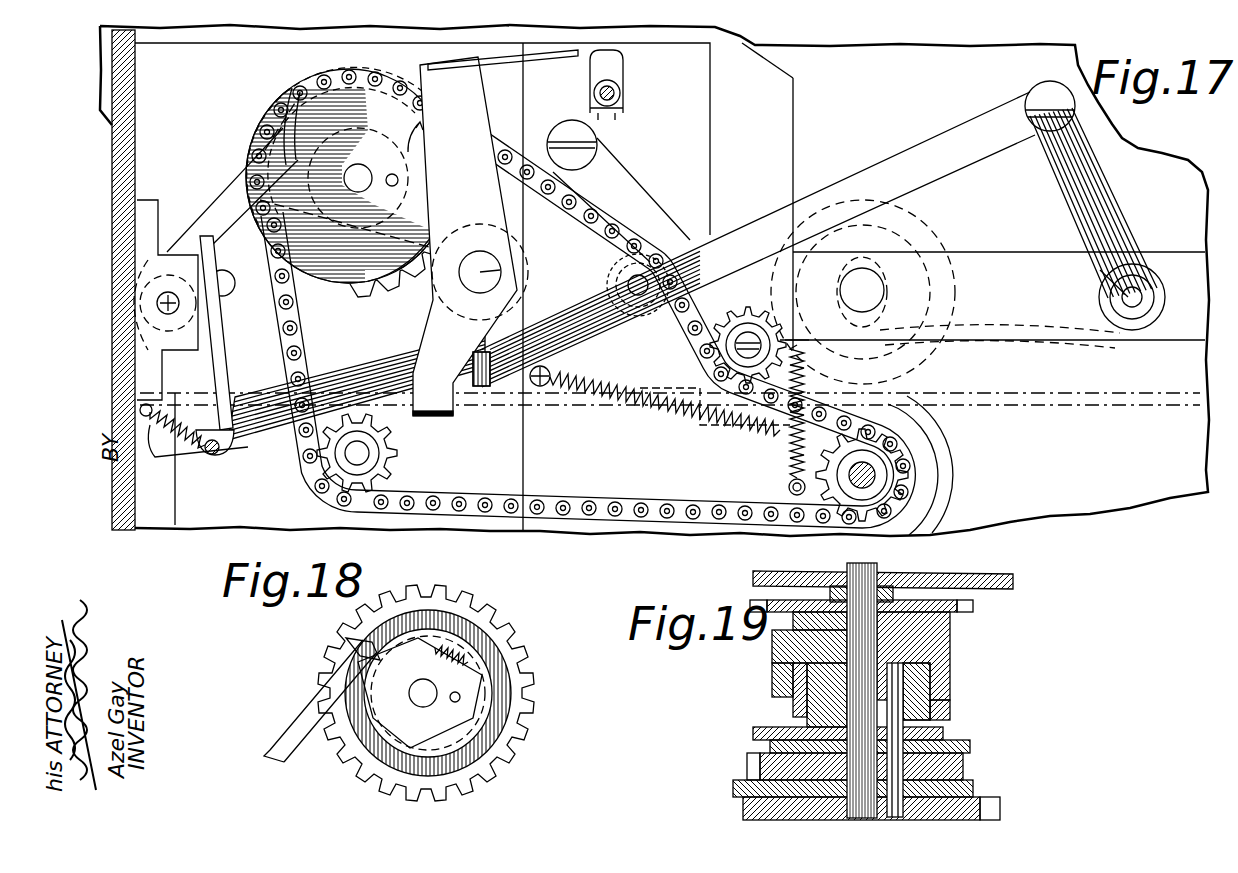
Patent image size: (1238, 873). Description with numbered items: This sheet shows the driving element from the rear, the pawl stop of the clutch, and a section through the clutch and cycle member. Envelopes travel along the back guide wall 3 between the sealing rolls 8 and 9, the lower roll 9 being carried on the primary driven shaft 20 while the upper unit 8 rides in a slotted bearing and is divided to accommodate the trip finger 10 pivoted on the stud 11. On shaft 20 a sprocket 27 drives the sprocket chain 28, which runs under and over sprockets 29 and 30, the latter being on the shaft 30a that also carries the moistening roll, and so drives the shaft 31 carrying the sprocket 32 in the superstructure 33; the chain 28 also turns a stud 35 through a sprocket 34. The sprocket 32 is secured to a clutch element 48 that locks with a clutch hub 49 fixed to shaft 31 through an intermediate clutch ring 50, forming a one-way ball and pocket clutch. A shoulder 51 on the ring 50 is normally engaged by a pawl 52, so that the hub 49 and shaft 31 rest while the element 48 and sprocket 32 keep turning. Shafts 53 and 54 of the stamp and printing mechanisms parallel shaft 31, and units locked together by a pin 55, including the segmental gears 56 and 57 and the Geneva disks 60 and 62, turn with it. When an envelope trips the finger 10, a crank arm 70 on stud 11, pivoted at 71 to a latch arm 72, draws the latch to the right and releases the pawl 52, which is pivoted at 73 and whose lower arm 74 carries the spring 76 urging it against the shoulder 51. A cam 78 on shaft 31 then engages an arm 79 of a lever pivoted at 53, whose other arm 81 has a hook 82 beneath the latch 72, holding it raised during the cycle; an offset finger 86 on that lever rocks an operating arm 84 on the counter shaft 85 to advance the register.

In FIG. 17, the back guide wall 3 is at (654, 280).
In FIG. 17, the upper sealing roll 8 is at (930, 248).
In FIG. 17, the lower sealing roll 9 is at (955, 488).
In FIG. 17, the trip finger 10 is at (790, 342).
In FIG. 17, the stud (rock shaft) 11 is at (1138, 290).
In FIG. 17, the primary driven shaft 20 is at (908, 462).
In FIG. 17, the sprocket 27 is at (785, 482).
In FIG. 17, the sprocket chain 28 is at (672, 338).
In FIG. 17, the sprocket 29 is at (836, 282).
In FIG. 17, the sprocket 30 is at (625, 272).
In FIG. 17, the shaft 30a is at (648, 312).
In FIG. 17, the shaft (cycle shaft) 31 is at (364, 193).
In FIG. 18, the shaft (cycle shaft) 31 is at (422, 681).
In FIG. 19, the shaft (cycle shaft) 31 is at (873, 564).
In FIG. 17, the sprocket 32 is at (398, 275).
In FIG. 18, the sprocket 32 is at (530, 682).
In FIG. 19, the sprocket 32 is at (975, 604).
In FIG. 17, the superstructure 33 is at (780, 74).
In FIG. 17, the sprocket 34 is at (405, 462).
In FIG. 17, the stud 35 is at (345, 456).
In FIG. 19, the clutch element 48 is at (950, 640).
In FIG. 18, the clutch hub 49 is at (421, 693).
In FIG. 19, the clutch hub 49 is at (803, 720).
In FIG. 18, the clutch ring 50 is at (508, 648).
In FIG. 19, the clutch ring 50 is at (788, 674).
In FIG. 17, the shoulder 51 is at (292, 92).
In FIG. 18, the shoulder 51 is at (345, 636).
In FIG. 17, the pawl 52 is at (225, 196).
In FIG. 18, the pawl 52 is at (307, 700).
In FIG. 17, the stamp shaft 53 is at (505, 268).
In FIG. 17, the printing shaft 54 is at (225, 297).
In FIG. 17, the pin 55 is at (397, 185).
In FIG. 18, the pin 55 is at (455, 702).
In FIG. 19, the pin 55 is at (905, 772).
In FIG. 19, the segmental gear 56 is at (1000, 808).
In FIG. 19, the segmental gear 57 is at (750, 759).
In FIG. 19, the disk 60 is at (970, 744).
In FIG. 19, the disk 62 is at (737, 789).
In FIG. 17, the crank arm 70 is at (1112, 215).
In FIG. 17, the pivot 71 is at (1044, 102).
In FIG. 17, the latch arm 72 is at (880, 165).
In FIG. 17, the pivot 73 is at (158, 310).
In FIG. 17, the lower arm 74 is at (205, 378).
In FIG. 17, the spring 76 is at (140, 411).
In FIG. 17, the cam 78 is at (349, 176).
In FIG. 19, the cam 78 is at (753, 729).
In FIG. 17, the arm 79 is at (482, 122).
In FIG. 17, the arm 81 is at (430, 340).
In FIG. 17, the hook 82 is at (458, 417).
In FIG. 17, the operating arm 84 is at (622, 70).
In FIG. 17, the counter shaft 85 is at (622, 96).
In FIG. 17, the offset finger 86 is at (552, 56).